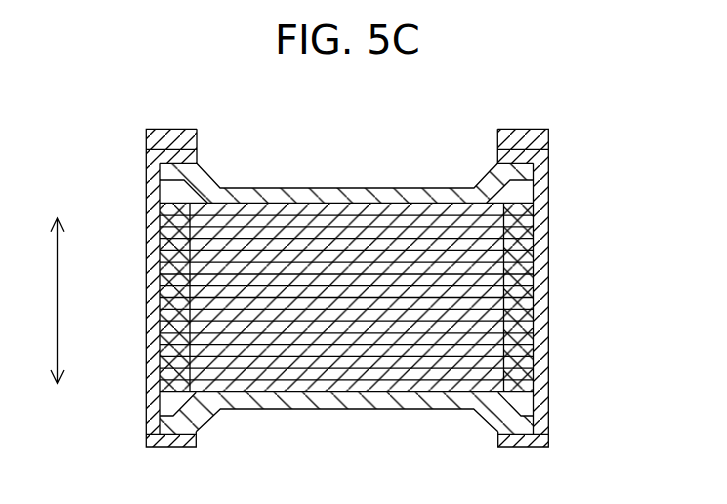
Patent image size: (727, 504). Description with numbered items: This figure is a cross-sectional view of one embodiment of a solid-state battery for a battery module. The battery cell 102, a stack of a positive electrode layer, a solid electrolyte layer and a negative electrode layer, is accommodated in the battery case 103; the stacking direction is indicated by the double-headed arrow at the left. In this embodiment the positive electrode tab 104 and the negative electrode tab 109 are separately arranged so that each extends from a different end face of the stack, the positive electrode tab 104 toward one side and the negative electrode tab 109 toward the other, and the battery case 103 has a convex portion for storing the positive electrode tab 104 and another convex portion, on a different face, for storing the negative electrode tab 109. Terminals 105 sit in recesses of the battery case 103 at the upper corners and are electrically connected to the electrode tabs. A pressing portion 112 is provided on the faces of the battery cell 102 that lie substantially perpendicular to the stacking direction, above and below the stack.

The battery cell 102 is at (402, 208).
The battery case 103 is at (160, 222).
The positive electrode tab 104 is at (160, 305).
The terminal 105 is at (167, 131).
The negative electrode tab 109 is at (529, 303).
The pressing portion 112 is at (279, 198).